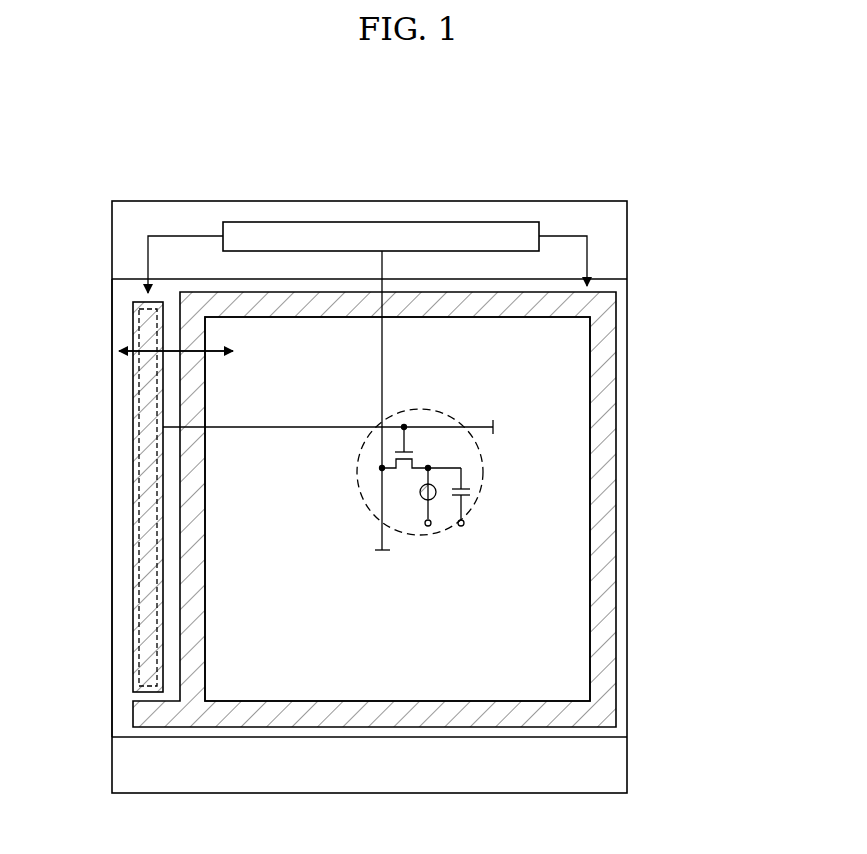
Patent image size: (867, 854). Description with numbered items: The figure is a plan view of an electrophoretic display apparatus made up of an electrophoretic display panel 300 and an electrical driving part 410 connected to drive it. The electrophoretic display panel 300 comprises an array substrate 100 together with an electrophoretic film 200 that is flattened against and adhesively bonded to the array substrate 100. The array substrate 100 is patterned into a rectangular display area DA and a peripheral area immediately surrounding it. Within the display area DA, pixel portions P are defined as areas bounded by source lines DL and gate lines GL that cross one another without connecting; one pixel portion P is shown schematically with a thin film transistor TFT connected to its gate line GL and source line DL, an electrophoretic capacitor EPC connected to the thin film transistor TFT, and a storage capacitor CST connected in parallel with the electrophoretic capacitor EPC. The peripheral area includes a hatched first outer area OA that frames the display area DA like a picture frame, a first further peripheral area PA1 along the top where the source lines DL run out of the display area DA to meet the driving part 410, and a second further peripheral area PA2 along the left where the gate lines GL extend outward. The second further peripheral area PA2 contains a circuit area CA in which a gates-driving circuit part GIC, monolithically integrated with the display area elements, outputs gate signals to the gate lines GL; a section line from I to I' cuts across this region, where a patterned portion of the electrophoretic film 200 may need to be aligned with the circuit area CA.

The array substrate 100 is at (615, 240).
The electrophoretic film 200 is at (612, 279).
The electrophoretic display panel 300 is at (698, 230).
The electrical driving part 410 is at (382, 222).
The first further peripheral area PA1 is at (579, 216).
The second further peripheral area PA2 is at (124, 569).
The first outer area OA is at (608, 455).
The display area DA is at (372, 380).
The gates-driving circuit part GIC is at (135, 323).
The circuit area CA is at (150, 522).
The section line start I is at (175, 367).
The section line end I' is at (184, 355).
The gate line GL is at (298, 429).
The source line DL is at (381, 535).
The pixel portion P is at (432, 412).
The thin film transistor TFT is at (421, 448).
The electrophoretic capacitor EPC is at (414, 497).
The storage capacitor CST is at (480, 497).